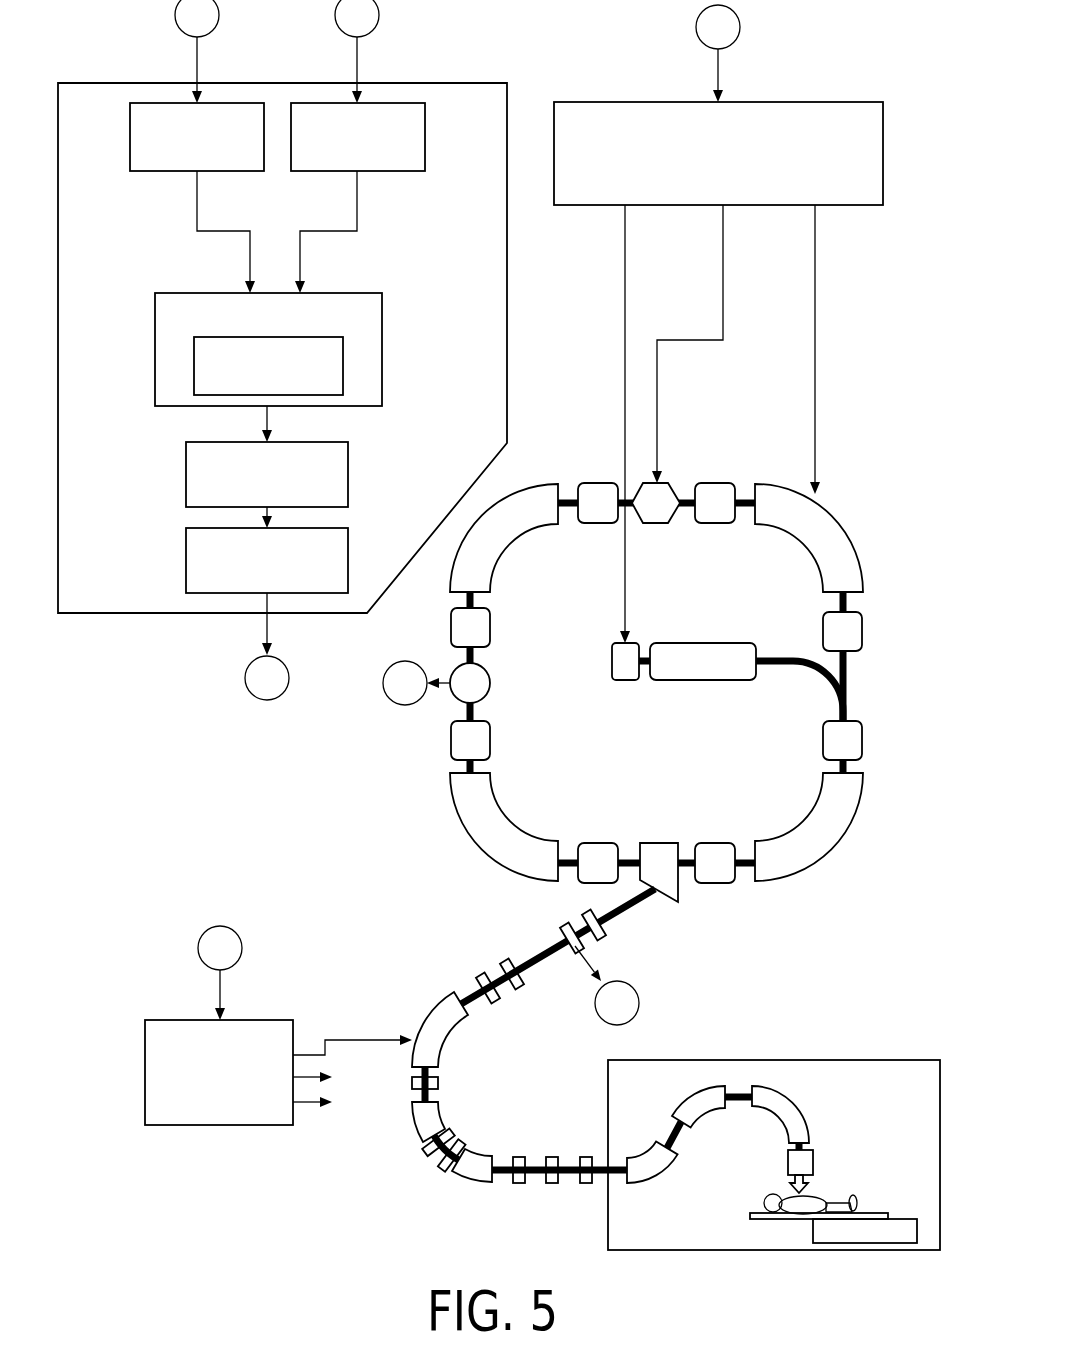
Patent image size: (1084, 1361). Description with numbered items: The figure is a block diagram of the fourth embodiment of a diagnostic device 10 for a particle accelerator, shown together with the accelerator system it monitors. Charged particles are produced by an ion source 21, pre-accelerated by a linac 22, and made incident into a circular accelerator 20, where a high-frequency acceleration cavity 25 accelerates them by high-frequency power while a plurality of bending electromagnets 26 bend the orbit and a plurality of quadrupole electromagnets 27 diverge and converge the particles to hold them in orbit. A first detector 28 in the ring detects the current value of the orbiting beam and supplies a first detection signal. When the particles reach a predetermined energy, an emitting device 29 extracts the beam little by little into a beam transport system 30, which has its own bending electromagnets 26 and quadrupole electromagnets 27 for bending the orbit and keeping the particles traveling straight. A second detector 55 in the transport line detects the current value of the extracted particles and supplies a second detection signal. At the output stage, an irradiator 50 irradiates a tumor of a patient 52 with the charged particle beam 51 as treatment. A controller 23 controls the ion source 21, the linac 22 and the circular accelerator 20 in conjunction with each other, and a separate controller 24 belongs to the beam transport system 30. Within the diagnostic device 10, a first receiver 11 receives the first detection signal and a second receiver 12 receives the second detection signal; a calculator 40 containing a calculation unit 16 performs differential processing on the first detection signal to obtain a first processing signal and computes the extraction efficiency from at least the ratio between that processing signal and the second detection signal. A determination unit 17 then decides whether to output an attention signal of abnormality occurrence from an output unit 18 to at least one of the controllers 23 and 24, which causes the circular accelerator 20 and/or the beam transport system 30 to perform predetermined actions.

The diagnostic device for a particle accelerator 10 is at (103, 83).
The first receiver 11 is at (130, 137).
The second receiver 12 is at (425, 137).
The calculation unit 16 is at (336, 337).
The determination unit 17 is at (186, 472).
The output unit 18 is at (186, 560).
The calculator 40 is at (155, 350).
The circular accelerator 20 is at (564, 428).
The ion source 21 is at (616, 641).
The linac 22 is at (687, 643).
The controller 23 is at (600, 102).
The controller 24 is at (178, 1020).
The high-frequency acceleration cavity 25 is at (670, 481).
The bending electromagnets 26 is at (843, 522).
The quadrupole electromagnets 27 is at (862, 630).
The first detector 28 is at (491, 681).
The emitting device 29 is at (670, 843).
The beam transport system 30 is at (368, 1190).
The irradiator 50 is at (820, 1060).
The charged particle beam 51 is at (796, 1190).
The patient 52 is at (750, 1213).
The second detector 55 is at (566, 927).